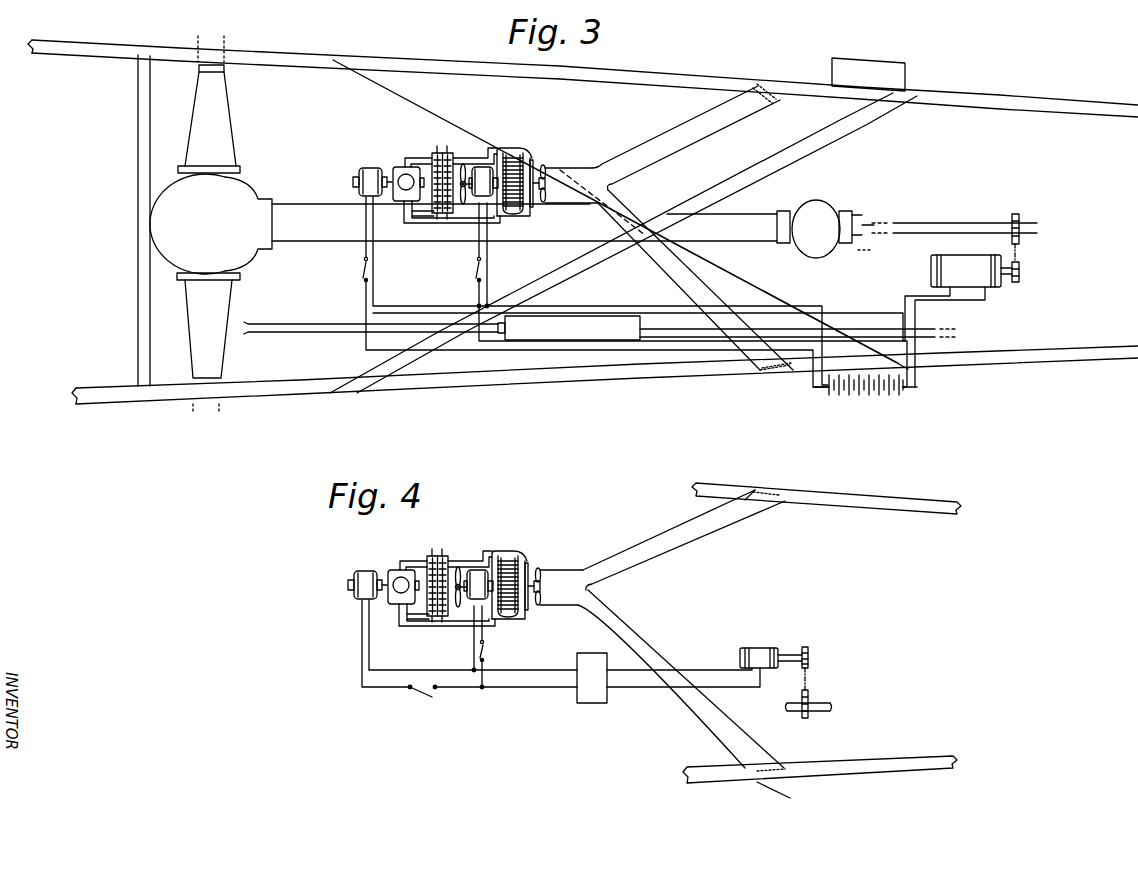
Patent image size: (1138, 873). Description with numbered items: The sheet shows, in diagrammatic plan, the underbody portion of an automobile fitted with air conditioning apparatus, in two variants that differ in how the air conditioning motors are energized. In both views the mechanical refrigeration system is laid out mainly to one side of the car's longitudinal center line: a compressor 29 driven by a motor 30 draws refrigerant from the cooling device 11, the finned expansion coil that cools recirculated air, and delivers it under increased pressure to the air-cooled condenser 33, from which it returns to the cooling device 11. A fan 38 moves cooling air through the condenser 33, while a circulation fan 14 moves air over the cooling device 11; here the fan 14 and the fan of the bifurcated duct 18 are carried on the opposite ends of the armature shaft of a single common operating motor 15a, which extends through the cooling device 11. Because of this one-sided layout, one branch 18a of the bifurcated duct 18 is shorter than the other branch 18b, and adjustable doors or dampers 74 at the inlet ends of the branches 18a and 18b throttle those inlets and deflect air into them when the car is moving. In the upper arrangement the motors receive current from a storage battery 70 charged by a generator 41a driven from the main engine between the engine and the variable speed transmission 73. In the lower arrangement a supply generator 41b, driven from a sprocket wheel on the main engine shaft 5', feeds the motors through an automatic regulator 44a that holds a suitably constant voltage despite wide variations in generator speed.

In FIG. 3, the main engine shaft 5' is at (954, 240).
In FIG. 4, the main engine shaft 5' is at (814, 682).
In FIG. 3, the cooling device 11 is at (525, 158).
In FIG. 4, the cooling device 11 is at (523, 574).
In FIG. 3, the circulation fan 14 is at (544, 193).
In FIG. 4, the circulation fan 14 is at (542, 600).
In FIG. 3, the common operating motor 15a is at (482, 166).
In FIG. 4, the common operating motor 15a is at (490, 556).
In FIG. 3, the bifurcated duct 18 is at (565, 188).
In FIG. 4, the bifurcated duct 18 is at (557, 581).
In FIG. 3, the duct branch 18a is at (667, 135).
In FIG. 4, the duct branch 18a is at (668, 538).
In FIG. 3, the duct branch 18b is at (670, 279).
In FIG. 4, the duct branch 18b is at (723, 725).
In FIG. 3, the compressor 29 is at (405, 166).
In FIG. 4, the compressor 29 is at (397, 610).
In FIG. 3, the motor 30 is at (370, 168).
In FIG. 4, the motor 30 is at (367, 569).
In FIG. 3, the condenser 33 is at (443, 156).
In FIG. 4, the condenser 33 is at (444, 571).
In FIG. 3, the fan 38 is at (462, 203).
In FIG. 4, the fan 38 is at (449, 617).
In FIG. 3, the generator 41a is at (970, 266).
In FIG. 4, the supply generator 41b is at (768, 636).
In FIG. 4, the automatic regulator 44a is at (597, 699).
In FIG. 3, the storage battery 70 is at (905, 393).
In FIG. 3, the variable speed transmission 73 is at (852, 213).
In FIG. 3, the adjustable doors or dampers 74 is at (793, 62).
In FIG. 4, the adjustable doors or dampers 74 is at (757, 483).